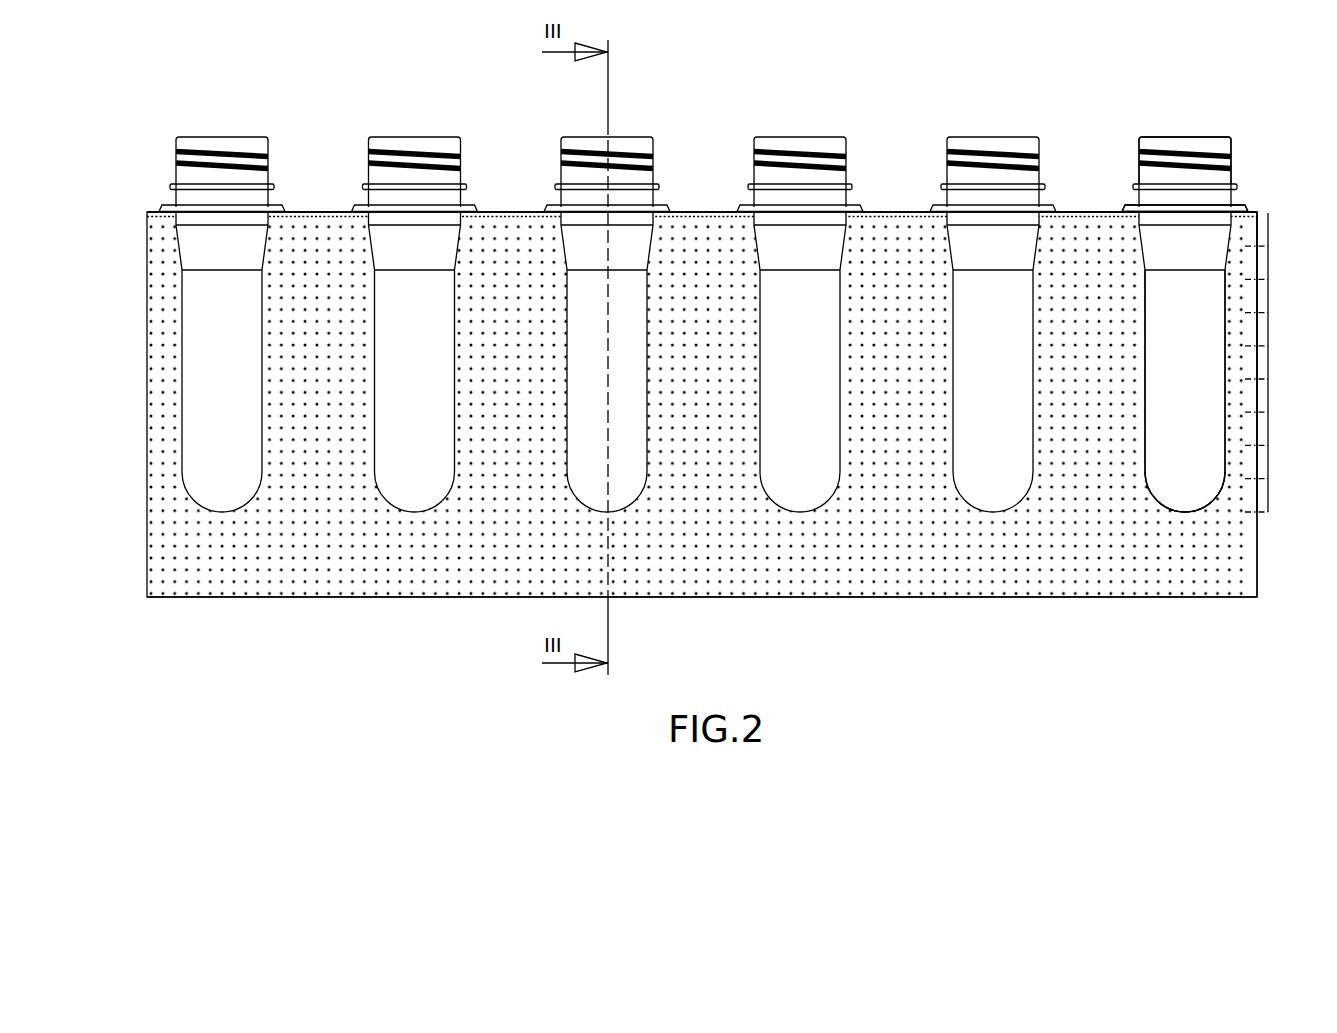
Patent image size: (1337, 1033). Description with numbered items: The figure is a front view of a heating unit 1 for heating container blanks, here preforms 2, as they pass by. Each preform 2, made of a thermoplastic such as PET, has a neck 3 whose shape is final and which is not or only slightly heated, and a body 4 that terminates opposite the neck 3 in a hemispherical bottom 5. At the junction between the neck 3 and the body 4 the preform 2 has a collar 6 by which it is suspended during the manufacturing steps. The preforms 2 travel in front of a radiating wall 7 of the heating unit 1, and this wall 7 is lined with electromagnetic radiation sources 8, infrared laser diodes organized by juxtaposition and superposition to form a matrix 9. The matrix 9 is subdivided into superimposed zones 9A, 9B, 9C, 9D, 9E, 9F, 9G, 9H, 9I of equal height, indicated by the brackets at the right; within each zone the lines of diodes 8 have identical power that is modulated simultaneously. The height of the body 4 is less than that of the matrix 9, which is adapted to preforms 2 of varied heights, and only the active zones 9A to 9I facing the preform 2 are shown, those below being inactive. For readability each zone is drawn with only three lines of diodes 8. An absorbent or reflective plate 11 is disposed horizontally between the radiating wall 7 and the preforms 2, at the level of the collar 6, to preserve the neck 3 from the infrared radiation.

The heating unit 1 is at (1270, 190).
The preform 2 is at (947, 137).
The neck 3 is at (1212, 145).
The body 4 is at (1195, 371).
The hemispherical bottom 5 is at (1187, 500).
The collar 6 is at (1133, 205).
The radiating wall 7 is at (1259, 583).
The electromagnetic radiation source 8 is at (1245, 227).
The matrix 9 is at (1223, 583).
The zone 9A is at (1268, 230).
The zone 9B is at (1268, 263).
The zone 9C is at (1268, 296).
The zone 9D is at (1268, 329).
The zone 9E is at (1268, 362).
The zone 9F is at (1268, 396).
The zone 9G is at (1268, 429).
The zone 9H is at (1268, 462).
The zone 9I is at (1268, 495).
The absorbent plate 11 is at (892, 212).